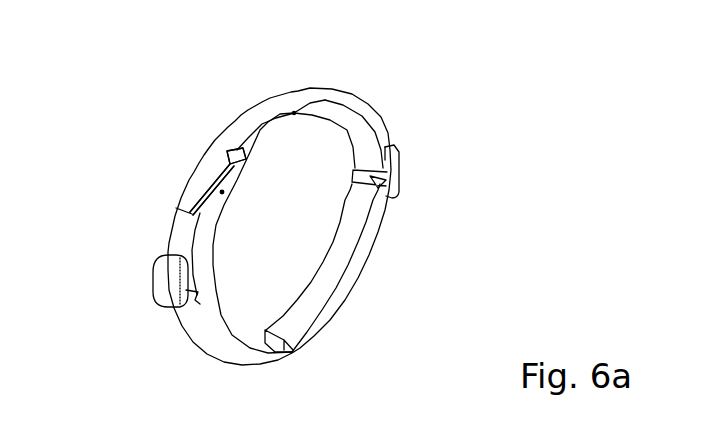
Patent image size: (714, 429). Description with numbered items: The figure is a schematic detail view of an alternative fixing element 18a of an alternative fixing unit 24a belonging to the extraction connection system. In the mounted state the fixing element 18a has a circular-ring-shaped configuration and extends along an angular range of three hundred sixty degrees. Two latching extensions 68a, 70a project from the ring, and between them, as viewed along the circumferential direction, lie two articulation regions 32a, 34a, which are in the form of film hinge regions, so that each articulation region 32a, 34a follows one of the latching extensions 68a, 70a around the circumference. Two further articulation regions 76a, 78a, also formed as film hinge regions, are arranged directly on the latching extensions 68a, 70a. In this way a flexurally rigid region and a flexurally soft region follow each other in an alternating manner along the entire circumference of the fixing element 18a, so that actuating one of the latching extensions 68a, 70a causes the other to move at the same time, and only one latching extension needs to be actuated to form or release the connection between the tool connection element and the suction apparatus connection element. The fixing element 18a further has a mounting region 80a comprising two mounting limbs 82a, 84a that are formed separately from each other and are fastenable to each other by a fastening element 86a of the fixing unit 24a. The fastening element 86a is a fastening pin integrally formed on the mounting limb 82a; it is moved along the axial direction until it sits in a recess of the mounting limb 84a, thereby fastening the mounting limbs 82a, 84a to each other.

The fixing element 18a is at (342, 267).
The fixing unit 24a is at (426, 96).
The articulation region 32a is at (295, 114).
The articulation region 34a is at (292, 352).
The latching extension 68a is at (165, 283).
The latching extension 70a is at (398, 167).
The further articulation region 76a is at (196, 296).
The further articulation region 78a is at (396, 196).
The mounting region 80a is at (174, 149).
The mounting limb 82a is at (190, 189).
The mounting limb 84a is at (238, 173).
The fastening element 86a is at (222, 193).